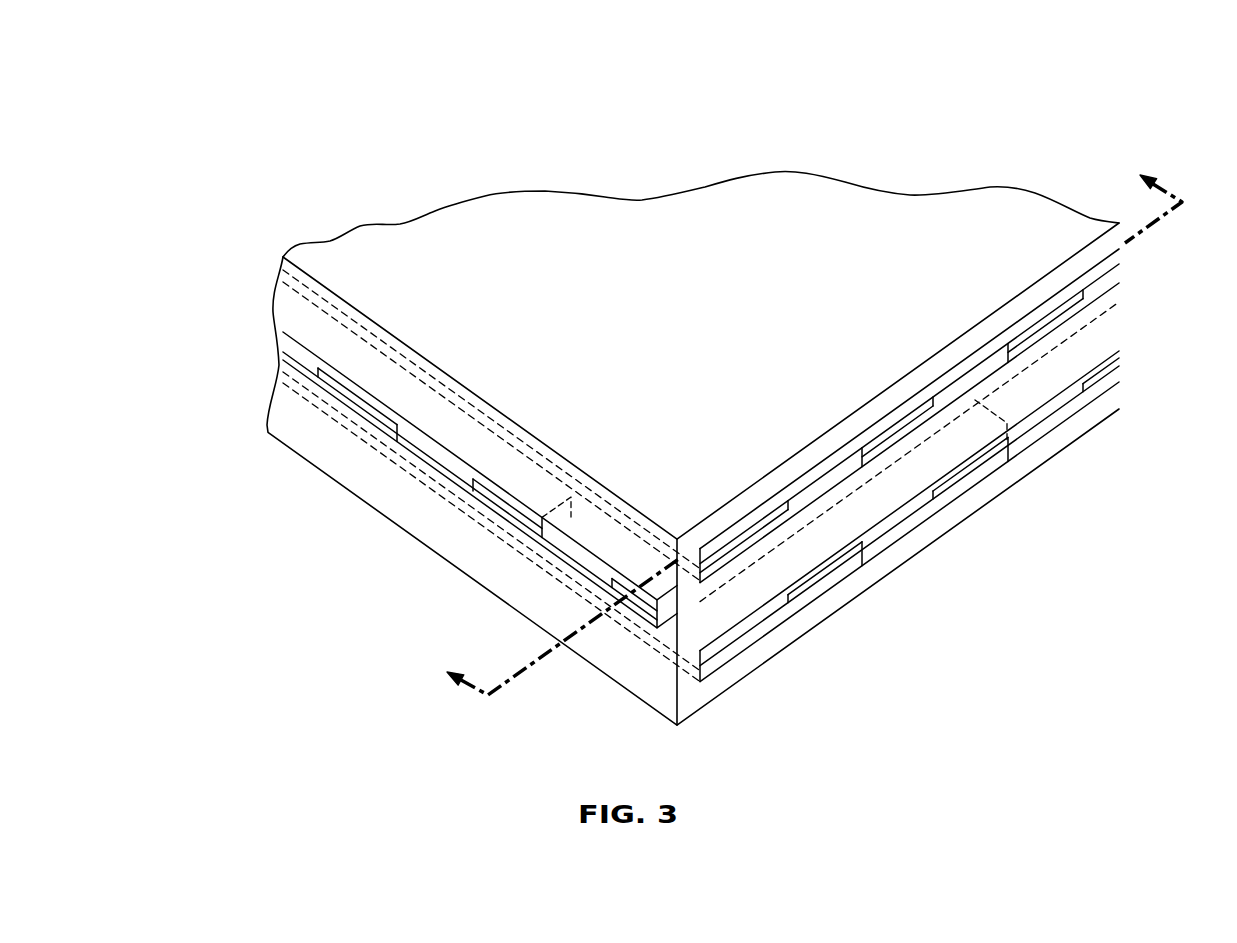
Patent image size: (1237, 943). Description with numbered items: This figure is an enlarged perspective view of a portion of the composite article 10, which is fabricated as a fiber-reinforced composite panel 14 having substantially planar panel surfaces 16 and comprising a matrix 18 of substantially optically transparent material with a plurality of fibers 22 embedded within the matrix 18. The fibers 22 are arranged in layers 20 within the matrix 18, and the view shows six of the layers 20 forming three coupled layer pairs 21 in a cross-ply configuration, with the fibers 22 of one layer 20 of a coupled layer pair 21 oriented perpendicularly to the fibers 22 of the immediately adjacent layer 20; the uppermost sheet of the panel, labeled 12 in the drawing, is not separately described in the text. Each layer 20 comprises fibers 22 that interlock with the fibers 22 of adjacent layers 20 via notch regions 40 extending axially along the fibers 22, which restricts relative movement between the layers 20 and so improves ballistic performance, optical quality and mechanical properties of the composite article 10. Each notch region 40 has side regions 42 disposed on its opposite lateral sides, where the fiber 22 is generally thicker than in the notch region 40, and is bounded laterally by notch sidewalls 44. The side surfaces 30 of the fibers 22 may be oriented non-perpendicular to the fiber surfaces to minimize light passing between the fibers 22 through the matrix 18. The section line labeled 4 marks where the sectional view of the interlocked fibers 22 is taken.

The composite article 10 is at (337, 234).
The top face sheet 12 is at (445, 238).
The fiber-reinforced composite panel 14 is at (757, 126).
The panel surfaces 16 is at (917, 217).
The matrix 18 is at (270, 440).
The layers 20 is at (282, 271).
The coupled layer pair 21 is at (1125, 247).
The fibers 22 is at (355, 400).
The side surfaces 30 is at (494, 498).
The notch region 40 is at (567, 562).
The side regions 42 is at (640, 600).
The notch sidewalls 44 is at (790, 598).
The section line 4- 4 is at (801, 425).